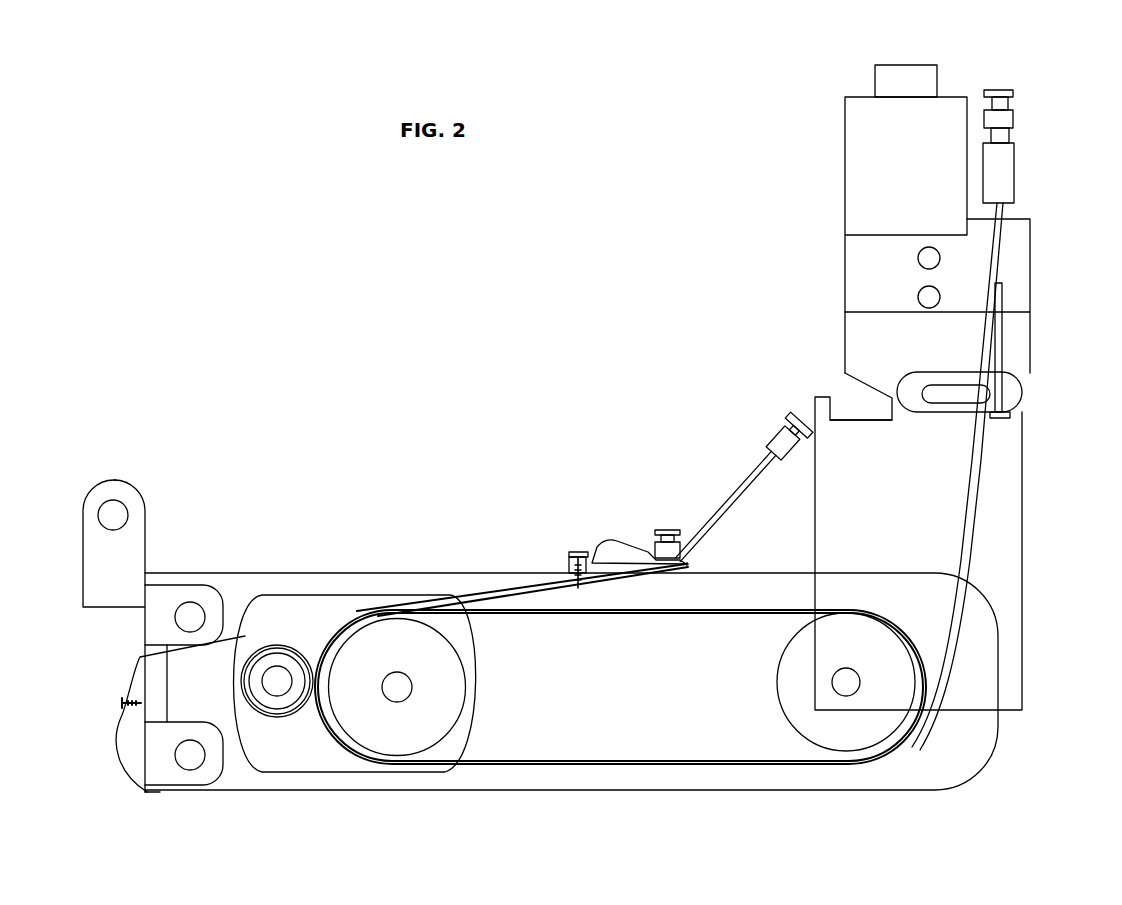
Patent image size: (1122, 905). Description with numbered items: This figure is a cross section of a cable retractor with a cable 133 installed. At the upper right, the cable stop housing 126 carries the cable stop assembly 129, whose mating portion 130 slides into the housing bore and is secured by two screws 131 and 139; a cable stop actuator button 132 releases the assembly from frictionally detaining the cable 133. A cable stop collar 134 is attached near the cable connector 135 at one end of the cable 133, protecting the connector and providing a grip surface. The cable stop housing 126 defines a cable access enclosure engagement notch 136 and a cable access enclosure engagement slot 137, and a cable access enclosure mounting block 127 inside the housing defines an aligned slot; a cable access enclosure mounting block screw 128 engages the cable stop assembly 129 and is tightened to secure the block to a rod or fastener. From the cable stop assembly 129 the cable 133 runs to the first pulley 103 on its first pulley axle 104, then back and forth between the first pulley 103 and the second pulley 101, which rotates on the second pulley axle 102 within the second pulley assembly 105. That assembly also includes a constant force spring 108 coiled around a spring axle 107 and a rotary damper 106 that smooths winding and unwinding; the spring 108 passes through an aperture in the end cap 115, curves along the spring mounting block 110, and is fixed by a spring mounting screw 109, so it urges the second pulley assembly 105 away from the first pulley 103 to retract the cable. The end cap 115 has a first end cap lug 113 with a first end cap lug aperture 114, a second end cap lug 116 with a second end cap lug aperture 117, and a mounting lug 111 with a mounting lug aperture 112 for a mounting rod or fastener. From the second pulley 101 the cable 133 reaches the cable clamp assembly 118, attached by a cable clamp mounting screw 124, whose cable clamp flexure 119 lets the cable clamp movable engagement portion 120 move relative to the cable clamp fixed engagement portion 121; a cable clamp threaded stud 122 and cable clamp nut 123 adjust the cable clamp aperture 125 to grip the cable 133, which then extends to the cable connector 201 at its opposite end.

The second pulley 101 is at (377, 617).
The second pulley axle 102 is at (397, 672).
The first pulley 103 is at (848, 750).
The first pulley axle 104 is at (860, 672).
The second pulley assembly 105 is at (440, 596).
The rotary damper 106 is at (282, 709).
The spring axle 107 is at (277, 667).
The spring 108 is at (290, 642).
The spring mounting screw 109 is at (120, 703).
The spring mounting block 110 is at (123, 750).
The mounting lug 111 is at (130, 481).
The mounting lug aperture 112 is at (128, 509).
The first end cap lug 113 is at (145, 621).
The first end cap lug aperture 114 is at (206, 615).
The end cap 115 is at (168, 688).
The second end cap lug 116 is at (170, 788).
The second end cap lug aperture 117 is at (192, 738).
The cable clamp assembly 118 is at (568, 563).
The cable clamp flexure 119 is at (593, 553).
The cable clamp movable engagement portion 120 is at (690, 560).
The cable clamp fixed engagement portion 121 is at (689, 574).
The cable clamp threaded stud 122 is at (660, 540).
The cable clamp nut 123 is at (672, 533).
The cable clamp mounting screw 124 is at (570, 556).
The cable clamp aperture 125 is at (688, 563).
The cable stop housing 126 is at (1022, 437).
The cable access enclosure mounting block 127 is at (1023, 388).
The cable access enclosure mounting block screw 128 is at (1002, 333).
The cable stop assembly 129 is at (845, 192).
The mating portion 130 is at (845, 282).
The cable stop assembly screw 131 is at (940, 295).
The cable stop actuator button 132 is at (937, 86).
The cable 133 is at (1005, 212).
The cable stop collar 134 is at (1014, 168).
The cable connector 135 is at (1013, 93).
The cable access enclosure engagement notch 136 is at (855, 418).
The cable access enclosure engagement slot 137 is at (943, 404).
The cable stop assembly screw 139 is at (920, 251).
The cable connector 201 is at (778, 432).